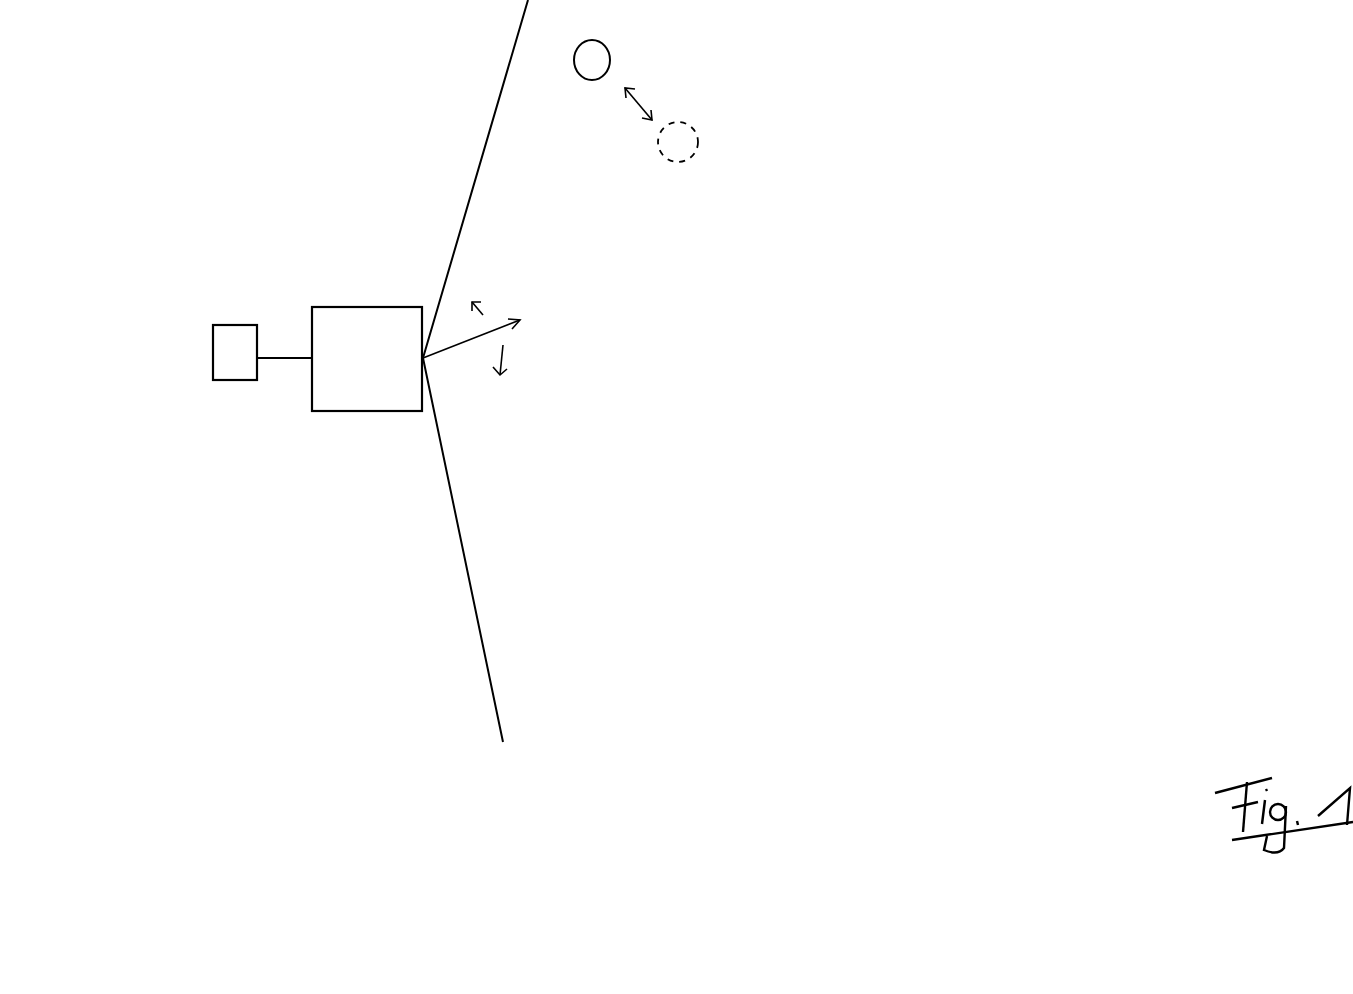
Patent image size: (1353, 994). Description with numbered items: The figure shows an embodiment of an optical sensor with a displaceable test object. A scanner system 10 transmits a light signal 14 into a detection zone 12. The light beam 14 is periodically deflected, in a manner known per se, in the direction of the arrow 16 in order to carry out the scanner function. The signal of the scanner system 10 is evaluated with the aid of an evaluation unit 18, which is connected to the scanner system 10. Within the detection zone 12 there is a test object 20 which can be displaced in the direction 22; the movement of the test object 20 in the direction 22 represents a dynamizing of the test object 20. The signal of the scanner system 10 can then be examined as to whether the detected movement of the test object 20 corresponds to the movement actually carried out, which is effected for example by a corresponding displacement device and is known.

The scanner system 10 is at (370, 325).
The detection zone 12 is at (572, 606).
The light signal 14 is at (468, 343).
The arrow 16 is at (503, 358).
The evaluation unit 18 is at (236, 367).
The test object 20 is at (608, 50).
The direction 22 is at (642, 102).